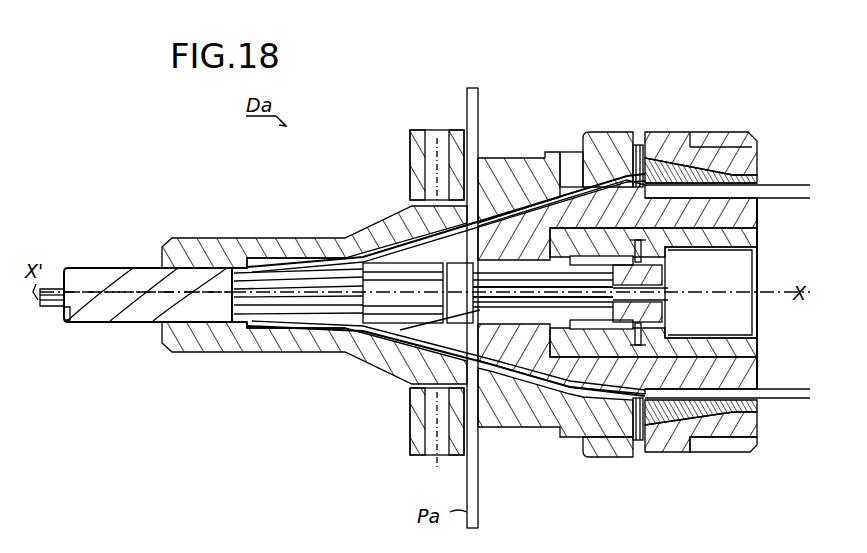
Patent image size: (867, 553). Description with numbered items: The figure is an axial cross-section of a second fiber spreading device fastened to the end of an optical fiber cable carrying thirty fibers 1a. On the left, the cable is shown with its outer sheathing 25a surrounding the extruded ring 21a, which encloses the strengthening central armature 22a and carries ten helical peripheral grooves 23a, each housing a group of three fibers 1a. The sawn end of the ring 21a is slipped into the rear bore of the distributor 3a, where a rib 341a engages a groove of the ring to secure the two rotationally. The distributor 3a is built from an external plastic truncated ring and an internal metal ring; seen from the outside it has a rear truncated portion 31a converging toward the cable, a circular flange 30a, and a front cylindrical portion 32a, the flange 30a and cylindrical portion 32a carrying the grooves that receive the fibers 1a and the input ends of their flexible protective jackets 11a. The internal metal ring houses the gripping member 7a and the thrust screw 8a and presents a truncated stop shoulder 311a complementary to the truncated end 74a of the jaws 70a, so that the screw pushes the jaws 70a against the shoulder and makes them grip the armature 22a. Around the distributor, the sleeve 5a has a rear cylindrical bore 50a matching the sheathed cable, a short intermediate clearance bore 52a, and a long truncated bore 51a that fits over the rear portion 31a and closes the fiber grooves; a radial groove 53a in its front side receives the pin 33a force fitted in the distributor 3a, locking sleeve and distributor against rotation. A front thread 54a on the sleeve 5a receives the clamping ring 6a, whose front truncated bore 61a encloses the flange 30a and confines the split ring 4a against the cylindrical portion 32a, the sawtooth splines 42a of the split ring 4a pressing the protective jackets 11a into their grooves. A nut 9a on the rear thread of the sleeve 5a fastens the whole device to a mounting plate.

The optical fiber 1a is at (327, 262).
The distributor 3a is at (759, 220).
The split ring 4a is at (681, 423).
The sleeve 5a is at (197, 238).
The clamping ring 6a is at (653, 440).
The gripping member 7a is at (654, 309).
The thrust screw 8a is at (740, 263).
The nut 9a is at (410, 441).
The protective jacket 11a is at (797, 386).
The cable ring 21a is at (69, 322).
The central armature 22a is at (55, 310).
The helical groove 23a is at (267, 313).
The outer sheathing 25a is at (85, 267).
The flange 30a is at (637, 185).
The rear truncated portion 31a is at (427, 342).
The front cylindrical portion 32a is at (683, 210).
The pin 33a is at (615, 178).
The sawtooth spline 42a is at (738, 392).
The cylindrical bore 50a is at (187, 353).
The truncated bore 51a is at (497, 213).
The intermediate clearance bore 52a is at (268, 256).
The radial groove 53a is at (592, 158).
The front thread 54a is at (573, 440).
The front truncated bore 61a is at (757, 178).
The jaw 70a is at (557, 315).
The truncated end 74a is at (527, 267).
The truncated stop shoulder 311a is at (520, 315).
The rib 341a is at (362, 328).